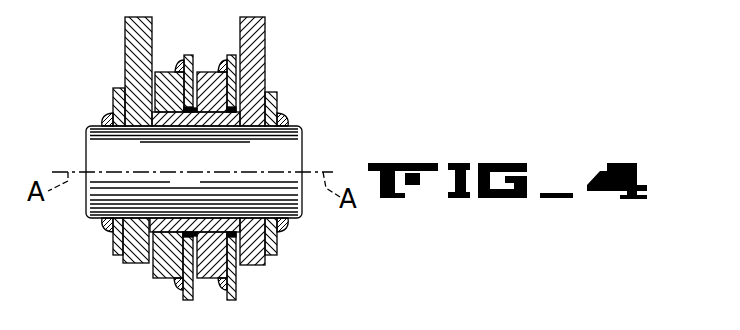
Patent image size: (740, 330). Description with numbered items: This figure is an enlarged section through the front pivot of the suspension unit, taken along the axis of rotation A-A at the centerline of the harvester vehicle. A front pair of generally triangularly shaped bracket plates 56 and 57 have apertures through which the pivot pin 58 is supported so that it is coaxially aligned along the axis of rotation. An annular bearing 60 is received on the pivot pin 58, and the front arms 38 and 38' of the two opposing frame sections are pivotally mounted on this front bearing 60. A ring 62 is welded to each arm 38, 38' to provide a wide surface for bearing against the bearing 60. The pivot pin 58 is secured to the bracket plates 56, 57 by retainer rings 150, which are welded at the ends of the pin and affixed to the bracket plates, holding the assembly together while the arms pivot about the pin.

The front arm 38 is at (244, 271).
The front arm 38' is at (145, 268).
The bracket plate 56 is at (258, 38).
The bracket plate 57 is at (130, 35).
The pivot pin 58 is at (297, 143).
The annular bearing 60 is at (223, 126).
The ring 62 is at (208, 72).
The retainer ring 150 is at (280, 99).